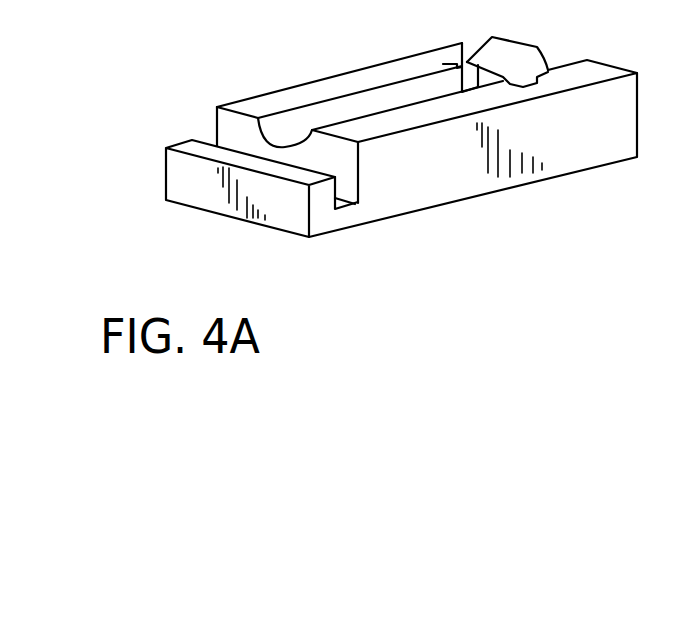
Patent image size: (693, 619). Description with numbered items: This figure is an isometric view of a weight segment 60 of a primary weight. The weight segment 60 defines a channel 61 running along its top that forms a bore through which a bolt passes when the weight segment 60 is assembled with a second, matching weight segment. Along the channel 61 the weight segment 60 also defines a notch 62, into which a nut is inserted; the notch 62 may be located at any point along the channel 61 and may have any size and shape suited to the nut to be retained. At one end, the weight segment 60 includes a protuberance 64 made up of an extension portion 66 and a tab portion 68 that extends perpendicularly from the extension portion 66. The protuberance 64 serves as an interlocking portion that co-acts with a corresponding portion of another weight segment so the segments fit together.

The weight segment 60 is at (307, 73).
The channel 61 is at (287, 127).
The notch 62 is at (470, 68).
The protuberance 64 is at (320, 203).
The extension portion 66 is at (352, 210).
The tab portion 68 is at (215, 157).